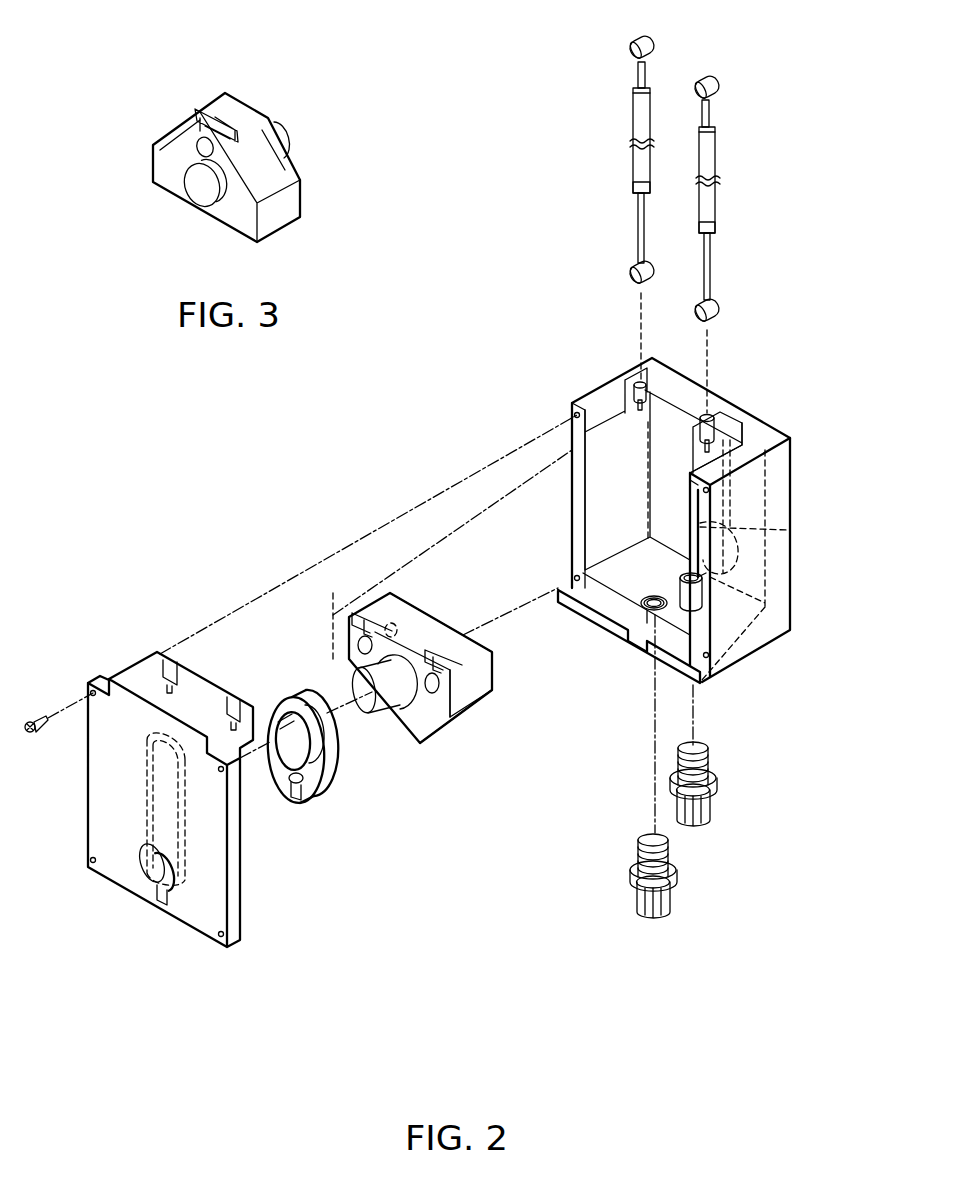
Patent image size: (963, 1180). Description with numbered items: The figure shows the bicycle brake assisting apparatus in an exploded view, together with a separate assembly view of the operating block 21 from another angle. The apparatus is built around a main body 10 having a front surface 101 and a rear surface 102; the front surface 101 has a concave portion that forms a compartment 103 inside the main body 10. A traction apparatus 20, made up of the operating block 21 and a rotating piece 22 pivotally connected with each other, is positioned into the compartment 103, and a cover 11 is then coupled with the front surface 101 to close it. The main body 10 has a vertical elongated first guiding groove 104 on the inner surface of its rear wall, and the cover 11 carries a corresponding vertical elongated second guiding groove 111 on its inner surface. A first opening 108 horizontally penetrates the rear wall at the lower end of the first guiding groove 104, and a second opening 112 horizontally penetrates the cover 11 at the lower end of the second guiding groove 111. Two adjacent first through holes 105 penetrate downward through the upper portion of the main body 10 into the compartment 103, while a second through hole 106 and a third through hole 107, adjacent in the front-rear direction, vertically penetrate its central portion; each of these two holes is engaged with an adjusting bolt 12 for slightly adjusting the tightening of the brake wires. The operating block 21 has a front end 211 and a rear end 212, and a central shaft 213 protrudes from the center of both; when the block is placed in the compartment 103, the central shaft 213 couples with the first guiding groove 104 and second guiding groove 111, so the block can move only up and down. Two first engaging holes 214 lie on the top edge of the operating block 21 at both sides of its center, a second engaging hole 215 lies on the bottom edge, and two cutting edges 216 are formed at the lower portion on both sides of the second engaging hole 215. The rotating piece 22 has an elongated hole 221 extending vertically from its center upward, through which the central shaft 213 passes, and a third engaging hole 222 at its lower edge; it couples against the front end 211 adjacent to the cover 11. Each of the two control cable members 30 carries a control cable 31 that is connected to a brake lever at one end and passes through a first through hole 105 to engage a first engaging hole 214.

In FIG. 2, the main body 10 is at (691, 577).
In FIG. 2, the front surface 101 is at (574, 517).
In FIG. 2, the rear surface 102 is at (792, 462).
In FIG. 2, the compartment 103 is at (745, 620).
In FIG. 2, the first guiding groove 104 is at (690, 500).
In FIG. 2, the first through holes 105 is at (636, 383).
In FIG. 2, the second through hole 106 is at (682, 578).
In FIG. 2, the third through hole 107 is at (624, 627).
In FIG. 2, the first opening 108 is at (775, 533).
In FIG. 2, the cover 11 is at (133, 799).
In FIG. 2, the second guiding groove 111 is at (145, 756).
In FIG. 2, the second opening 112 is at (150, 870).
In FIG. 2, the adjusting bolt 12 is at (712, 805).
In FIG. 2, the traction apparatus 20 is at (402, 734).
In FIG. 3, the operating block 21 is at (224, 135).
In FIG. 2, the operating block 21 is at (418, 678).
In FIG. 3, the front end 211 is at (300, 190).
In FIG. 2, the front end 211 is at (411, 722).
In FIG. 3, the rear end 212 is at (163, 157).
In FIG. 2, the rear end 212 is at (442, 620).
In FIG. 3, the central shaft 213 is at (274, 130).
In FIG. 2, the central shaft 213 is at (372, 692).
In FIG. 2, the first engaging holes 214 is at (352, 630).
In FIG. 3, the second engaging hole 215 is at (236, 124).
In FIG. 3, the cutting edges 216 is at (182, 120).
In FIG. 2, the cutting edges 216 is at (348, 667).
In FIG. 2, the rotating piece 22 is at (308, 751).
In FIG. 2, the elongated hole 221 is at (273, 713).
In FIG. 2, the third engaging hole 222 is at (287, 797).
In FIG. 2, the control cable members 30 is at (667, 223).
In FIG. 2, the control cable 31 is at (640, 222).